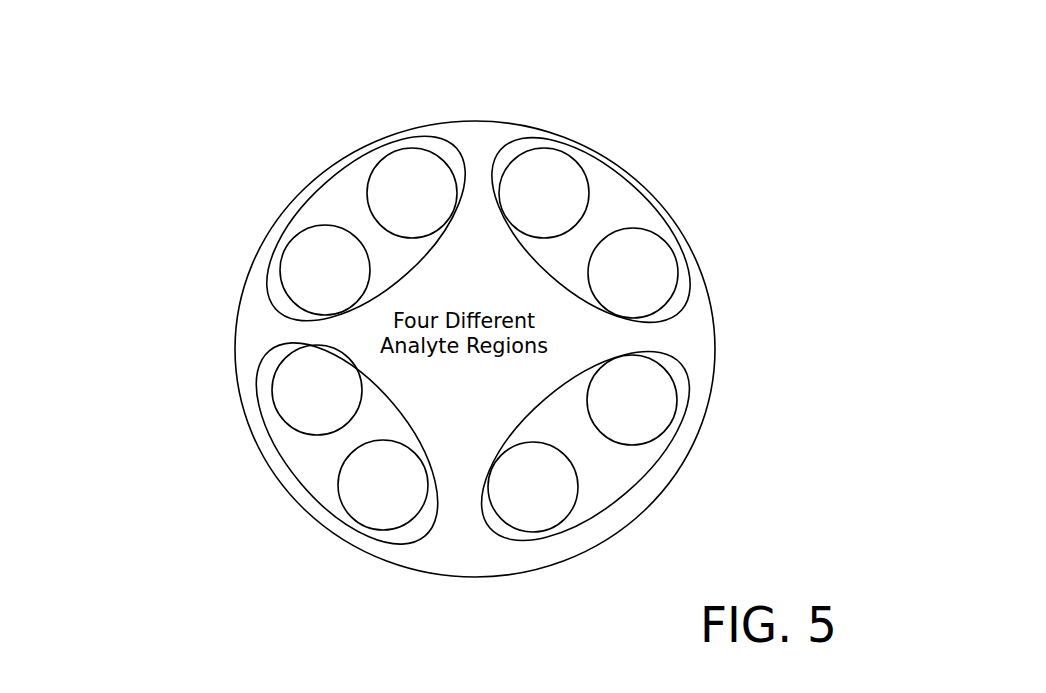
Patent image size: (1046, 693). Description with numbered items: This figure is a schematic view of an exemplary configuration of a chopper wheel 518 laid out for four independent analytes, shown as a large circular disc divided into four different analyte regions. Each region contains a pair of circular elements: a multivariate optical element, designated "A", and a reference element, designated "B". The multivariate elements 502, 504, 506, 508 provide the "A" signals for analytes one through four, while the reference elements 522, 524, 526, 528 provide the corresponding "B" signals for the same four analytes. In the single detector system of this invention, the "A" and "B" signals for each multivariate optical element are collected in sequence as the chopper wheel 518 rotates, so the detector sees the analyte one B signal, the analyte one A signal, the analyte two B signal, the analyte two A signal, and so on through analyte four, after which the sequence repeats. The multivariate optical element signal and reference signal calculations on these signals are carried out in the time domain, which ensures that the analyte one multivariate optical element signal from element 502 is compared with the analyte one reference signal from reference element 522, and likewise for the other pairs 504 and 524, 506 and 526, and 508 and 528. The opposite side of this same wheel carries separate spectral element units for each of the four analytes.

The multivariate element 502 is at (647, 232).
The multivariate element 504 is at (578, 490).
The multivariate element 506 is at (280, 438).
The multivariate element 508 is at (373, 167).
The chopper wheel 518 is at (710, 300).
The reference element 522 is at (568, 153).
The reference element 524 is at (677, 393).
The reference element 526 is at (357, 520).
The reference element 528 is at (302, 233).